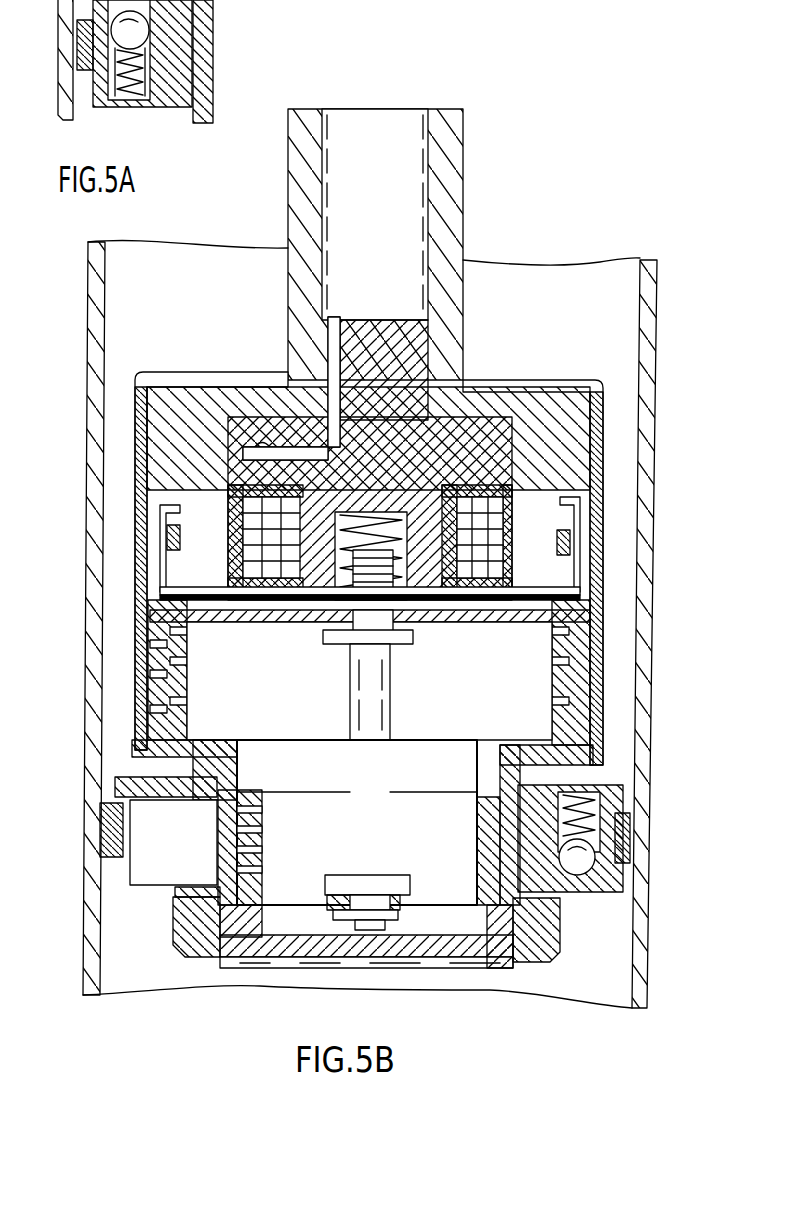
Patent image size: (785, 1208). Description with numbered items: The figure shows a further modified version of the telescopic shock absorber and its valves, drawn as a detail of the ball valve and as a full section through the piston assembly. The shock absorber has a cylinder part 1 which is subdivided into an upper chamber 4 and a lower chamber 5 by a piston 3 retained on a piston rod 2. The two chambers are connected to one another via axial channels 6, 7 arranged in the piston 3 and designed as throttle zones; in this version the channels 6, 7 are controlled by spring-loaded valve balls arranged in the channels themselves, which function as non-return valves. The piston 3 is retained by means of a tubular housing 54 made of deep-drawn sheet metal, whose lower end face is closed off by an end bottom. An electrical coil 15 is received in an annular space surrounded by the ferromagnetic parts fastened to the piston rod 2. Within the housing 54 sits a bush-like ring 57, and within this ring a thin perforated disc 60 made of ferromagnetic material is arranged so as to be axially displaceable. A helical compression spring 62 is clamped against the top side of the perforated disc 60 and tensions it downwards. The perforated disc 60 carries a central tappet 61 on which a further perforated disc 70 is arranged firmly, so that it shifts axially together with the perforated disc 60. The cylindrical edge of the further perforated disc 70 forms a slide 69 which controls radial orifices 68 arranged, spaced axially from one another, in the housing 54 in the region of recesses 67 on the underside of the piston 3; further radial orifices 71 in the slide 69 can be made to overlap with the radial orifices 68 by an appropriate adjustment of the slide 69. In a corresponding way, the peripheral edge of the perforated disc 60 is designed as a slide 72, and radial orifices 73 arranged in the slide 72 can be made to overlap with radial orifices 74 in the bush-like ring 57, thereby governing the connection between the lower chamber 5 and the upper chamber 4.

In FIG. 5B, the cylinder part 1 is at (100, 280).
In FIG. 5B, the piston rod 2 is at (307, 118).
In FIG. 5A, the piston 3 is at (172, 95).
In FIG. 5B, the piston 3 is at (133, 900).
In FIG. 5B, the upper chamber 4 is at (118, 308).
In FIG. 5B, the lower chamber 5 is at (135, 940).
In FIG. 5B, the axial channel 6 is at (580, 838).
In FIG. 5A, the axial channel 7 is at (150, 52).
In FIG. 5B, the electrical coil 15 is at (240, 545).
In FIG. 5B, the tubular housing 54 is at (600, 402).
In FIG. 5B, the bush-like ring 57 is at (585, 633).
In FIG. 5B, the perforated disc 60 is at (150, 593).
In FIG. 5B, the tappet 61 is at (385, 688).
In FIG. 5B, the helical compression spring 62 is at (410, 572).
In FIG. 5B, the recesses 67 is at (148, 870).
In FIG. 5B, the radial orifices 68 is at (217, 845).
In FIG. 5B, the slide 69 is at (478, 905).
In FIG. 5B, the further perforated disc 70 is at (445, 905).
In FIG. 5B, the radial orifices 71 is at (262, 870).
In FIG. 5B, the slide 72 is at (598, 738).
In FIG. 5B, the radial orifices 73 is at (190, 700).
In FIG. 5B, the radial orifices 74 is at (160, 690).